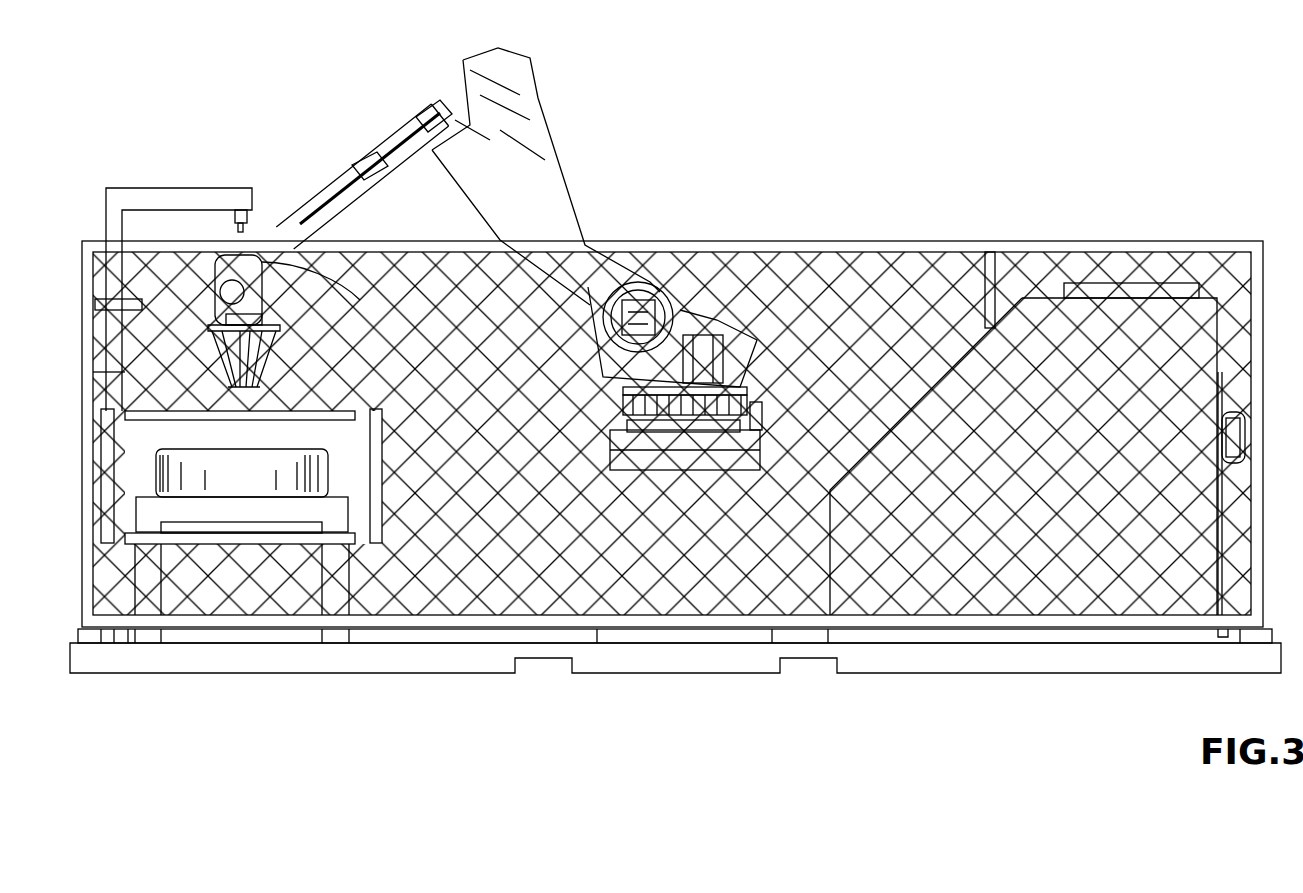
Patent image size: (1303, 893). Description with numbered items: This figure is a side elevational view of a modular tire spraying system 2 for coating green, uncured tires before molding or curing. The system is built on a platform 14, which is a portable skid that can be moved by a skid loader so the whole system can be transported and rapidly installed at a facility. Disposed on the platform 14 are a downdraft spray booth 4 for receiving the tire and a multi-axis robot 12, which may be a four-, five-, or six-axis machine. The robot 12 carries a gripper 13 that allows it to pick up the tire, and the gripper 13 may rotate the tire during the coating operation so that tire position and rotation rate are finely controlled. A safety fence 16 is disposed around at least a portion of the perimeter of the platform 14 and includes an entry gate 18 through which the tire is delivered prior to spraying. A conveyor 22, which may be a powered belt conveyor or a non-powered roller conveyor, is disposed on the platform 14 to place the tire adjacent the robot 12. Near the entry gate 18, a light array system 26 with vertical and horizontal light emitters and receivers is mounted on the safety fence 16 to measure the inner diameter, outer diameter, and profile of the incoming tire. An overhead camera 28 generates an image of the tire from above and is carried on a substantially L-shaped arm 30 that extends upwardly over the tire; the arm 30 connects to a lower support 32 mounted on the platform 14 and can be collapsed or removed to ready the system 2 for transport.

The modular tire spraying system 2 is at (1142, 142).
The downdraft spray booth 4 is at (1047, 290).
The robot 12 is at (521, 186).
The gripper 13 is at (365, 292).
The platform 14 is at (455, 668).
The safety fence 16 is at (775, 241).
The entry gate 18 is at (140, 453).
The conveyor 22 is at (152, 487).
The light array system 26 is at (148, 412).
The camera 28 is at (252, 228).
The arm 30 is at (106, 212).
The lower support 32 is at (118, 372).